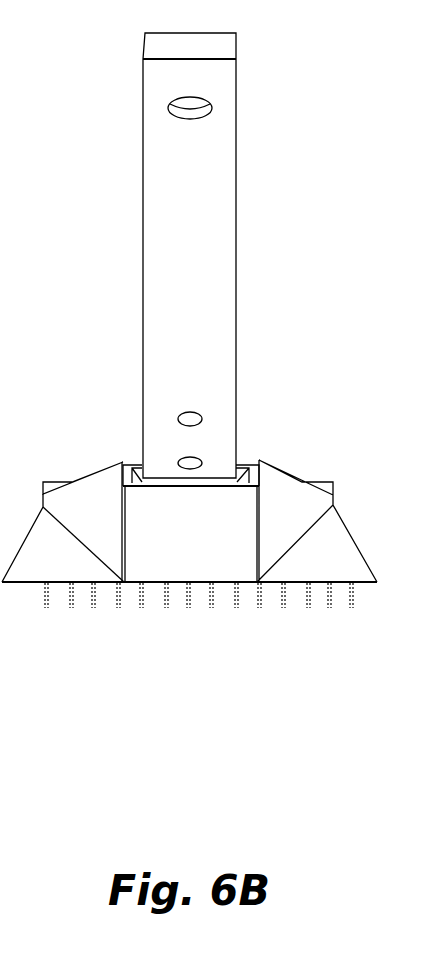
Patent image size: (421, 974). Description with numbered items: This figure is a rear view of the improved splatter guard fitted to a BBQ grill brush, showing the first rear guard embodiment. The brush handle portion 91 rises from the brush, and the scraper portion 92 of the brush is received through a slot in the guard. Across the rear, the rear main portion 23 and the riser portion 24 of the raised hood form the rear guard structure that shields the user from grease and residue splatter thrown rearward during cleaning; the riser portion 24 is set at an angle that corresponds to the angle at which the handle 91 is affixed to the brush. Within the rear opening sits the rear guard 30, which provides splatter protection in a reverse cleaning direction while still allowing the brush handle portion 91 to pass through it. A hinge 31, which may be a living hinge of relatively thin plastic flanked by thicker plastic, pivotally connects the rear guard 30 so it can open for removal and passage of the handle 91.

The brush handle portion 91 is at (222, 118).
The scraper portion 92 is at (53, 488).
The rear main portion 23 is at (57, 562).
The riser portion 24 is at (110, 537).
The rear guard 30 is at (192, 545).
The hinge 31 is at (257, 530).